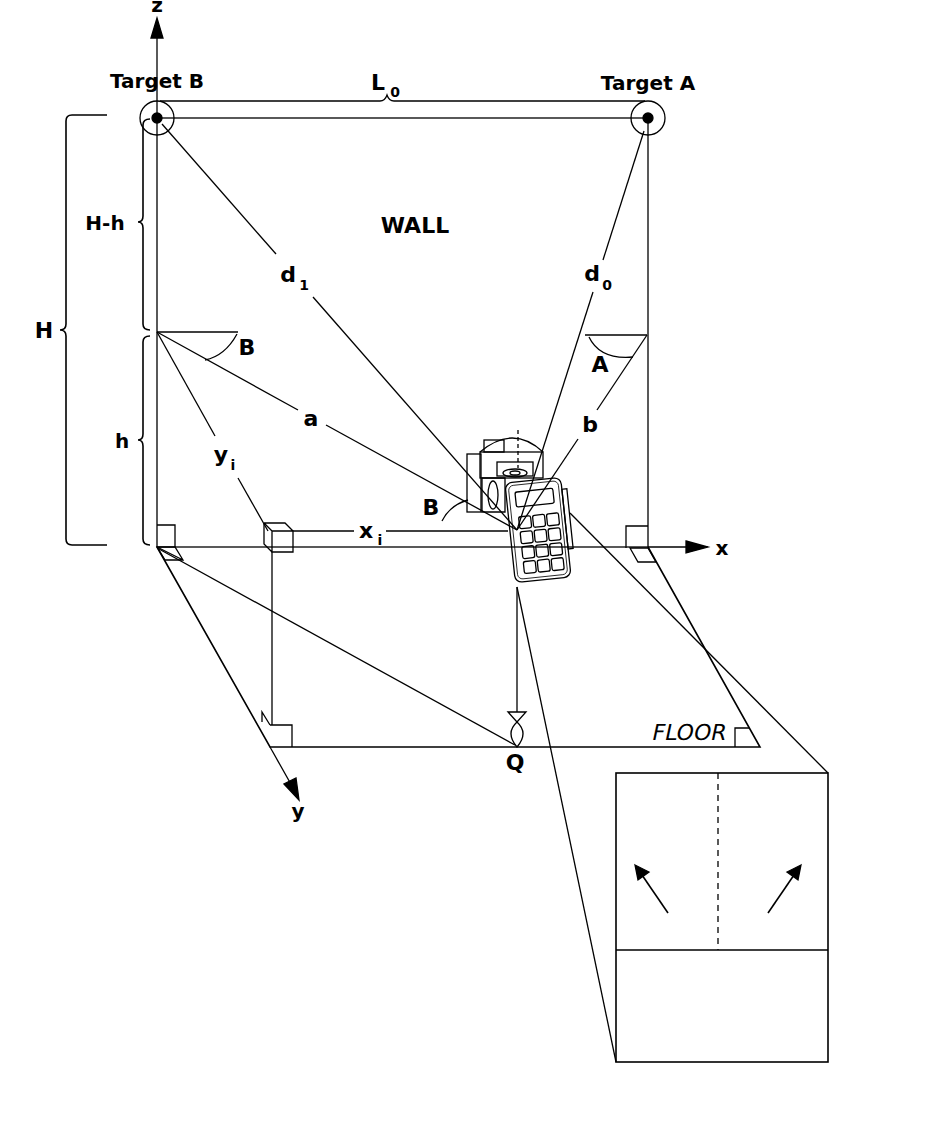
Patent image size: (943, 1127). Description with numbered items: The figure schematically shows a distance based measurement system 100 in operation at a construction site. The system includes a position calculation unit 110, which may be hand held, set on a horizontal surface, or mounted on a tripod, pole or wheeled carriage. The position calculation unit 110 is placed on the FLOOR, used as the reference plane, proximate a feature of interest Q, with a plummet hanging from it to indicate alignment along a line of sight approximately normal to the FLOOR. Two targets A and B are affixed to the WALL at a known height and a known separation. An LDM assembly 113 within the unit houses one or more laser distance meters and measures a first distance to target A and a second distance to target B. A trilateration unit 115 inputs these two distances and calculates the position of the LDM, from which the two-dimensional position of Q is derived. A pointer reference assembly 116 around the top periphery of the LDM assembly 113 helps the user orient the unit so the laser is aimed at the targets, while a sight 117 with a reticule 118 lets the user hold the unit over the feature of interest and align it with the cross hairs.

The distance based measurement system 100 is at (586, 526).
The position calculation unit 110 is at (510, 562).
The LDM assembly 113 is at (484, 493).
The trilateration unit 115 is at (578, 563).
The pointer reference assembly 116 is at (511, 452).
The sight 117 is at (508, 467).
The reticule 118 is at (516, 468).